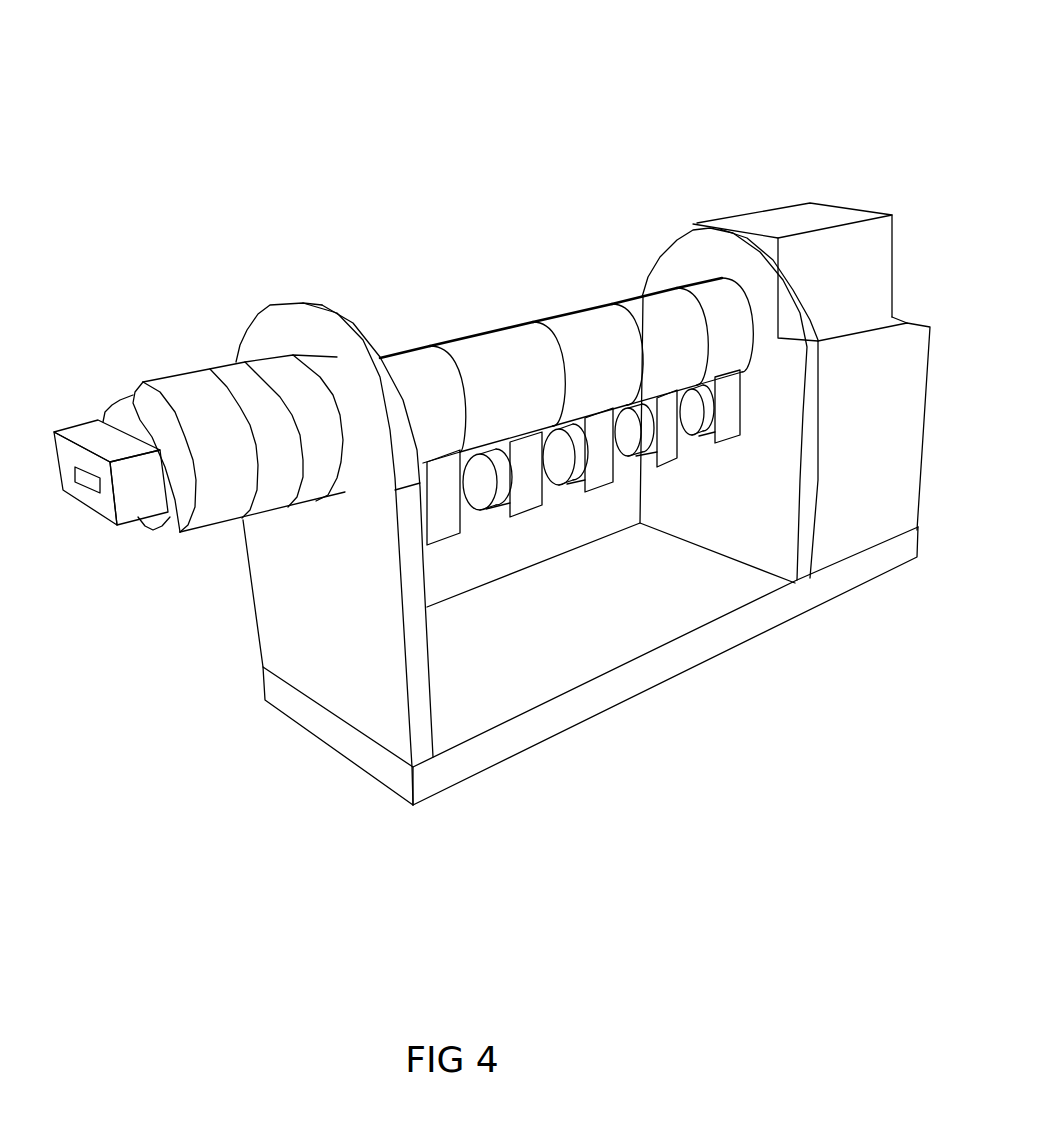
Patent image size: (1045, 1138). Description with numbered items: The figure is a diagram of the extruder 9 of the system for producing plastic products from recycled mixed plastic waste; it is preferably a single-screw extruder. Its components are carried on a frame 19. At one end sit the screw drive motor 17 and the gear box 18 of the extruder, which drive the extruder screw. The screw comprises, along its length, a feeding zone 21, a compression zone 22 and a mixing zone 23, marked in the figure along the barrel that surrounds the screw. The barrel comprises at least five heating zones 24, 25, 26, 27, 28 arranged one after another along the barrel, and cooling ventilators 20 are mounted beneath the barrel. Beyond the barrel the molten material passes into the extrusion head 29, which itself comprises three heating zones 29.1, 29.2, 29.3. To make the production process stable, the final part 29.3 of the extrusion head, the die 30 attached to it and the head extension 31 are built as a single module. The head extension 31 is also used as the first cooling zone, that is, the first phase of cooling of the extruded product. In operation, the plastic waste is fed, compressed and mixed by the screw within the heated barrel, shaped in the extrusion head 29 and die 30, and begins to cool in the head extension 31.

The extruder 9 is at (282, 95).
The screw drive motor 17 is at (853, 488).
The gear box 18 is at (792, 223).
The frame 19 is at (415, 688).
The cooling ventilators 20 is at (650, 438).
The feeding zone 21 is at (677, 231).
The compression zone 22 is at (604, 251).
The mixing zone 23 is at (445, 268).
The heating zone 24 is at (715, 331).
The heating zone 25 is at (660, 346).
The heating zone 26 is at (588, 365).
The heating zone 27 is at (497, 387).
The heating zone 28 is at (423, 404).
The extrusion head 29 is at (210, 363).
The heating zone of the extrusion head 29.1 is at (332, 460).
The heating zone of the extrusion head 29.2 is at (283, 450).
The final part of the extrusion head 29.3 is at (237, 483).
The die 30 is at (184, 488).
The head extension 31 is at (138, 485).